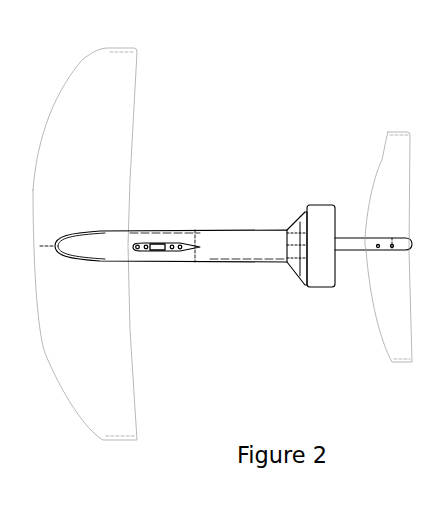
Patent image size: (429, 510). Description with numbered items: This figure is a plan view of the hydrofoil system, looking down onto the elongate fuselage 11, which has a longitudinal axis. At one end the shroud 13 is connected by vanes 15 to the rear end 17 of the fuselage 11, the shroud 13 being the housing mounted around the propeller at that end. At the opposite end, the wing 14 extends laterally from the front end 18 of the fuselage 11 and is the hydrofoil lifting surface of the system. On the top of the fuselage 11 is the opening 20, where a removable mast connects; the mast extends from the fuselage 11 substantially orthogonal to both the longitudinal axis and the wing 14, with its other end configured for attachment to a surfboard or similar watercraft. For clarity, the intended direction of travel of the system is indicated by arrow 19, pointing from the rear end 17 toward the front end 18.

The fuselage 11 is at (232, 235).
The shroud 13 is at (323, 215).
The wing 14 is at (108, 112).
The vanes 15 is at (297, 217).
The rear end 17 is at (284, 303).
The front end 18 is at (92, 292).
The arrow 19 is at (360, 73).
The opening 20 is at (152, 235).